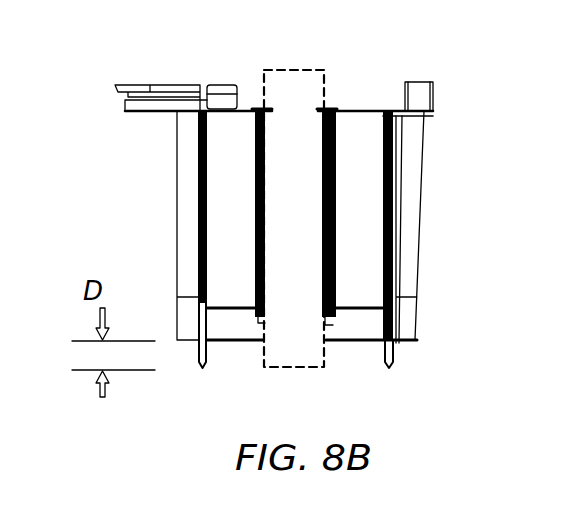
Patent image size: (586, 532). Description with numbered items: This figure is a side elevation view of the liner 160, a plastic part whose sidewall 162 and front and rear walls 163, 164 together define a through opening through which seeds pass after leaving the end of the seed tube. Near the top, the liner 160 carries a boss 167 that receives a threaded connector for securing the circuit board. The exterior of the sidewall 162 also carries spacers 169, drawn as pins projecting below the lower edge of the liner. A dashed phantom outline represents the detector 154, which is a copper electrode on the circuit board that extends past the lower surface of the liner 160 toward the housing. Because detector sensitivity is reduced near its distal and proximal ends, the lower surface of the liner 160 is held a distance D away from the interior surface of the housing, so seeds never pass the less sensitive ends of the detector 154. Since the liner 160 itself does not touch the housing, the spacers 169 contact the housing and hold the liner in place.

The liner 160 is at (78, 109).
The sidewall 162 is at (222, 198).
The front wall 163 is at (357, 111).
The rear wall 164 is at (355, 343).
The boss 167 is at (217, 84).
The spacer 169 is at (204, 370).
The detector 154 is at (295, 100).